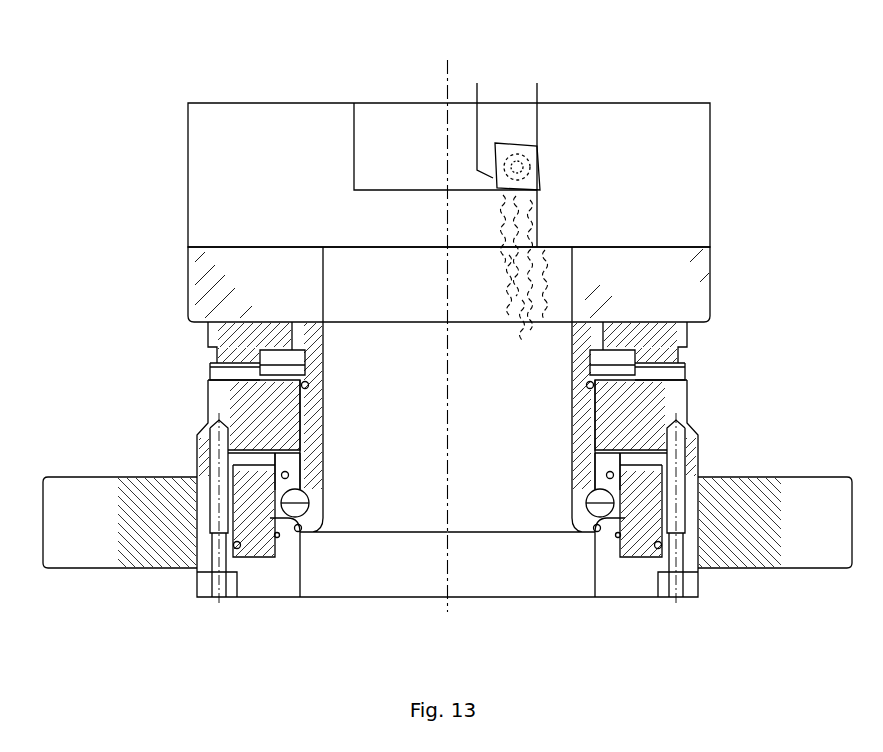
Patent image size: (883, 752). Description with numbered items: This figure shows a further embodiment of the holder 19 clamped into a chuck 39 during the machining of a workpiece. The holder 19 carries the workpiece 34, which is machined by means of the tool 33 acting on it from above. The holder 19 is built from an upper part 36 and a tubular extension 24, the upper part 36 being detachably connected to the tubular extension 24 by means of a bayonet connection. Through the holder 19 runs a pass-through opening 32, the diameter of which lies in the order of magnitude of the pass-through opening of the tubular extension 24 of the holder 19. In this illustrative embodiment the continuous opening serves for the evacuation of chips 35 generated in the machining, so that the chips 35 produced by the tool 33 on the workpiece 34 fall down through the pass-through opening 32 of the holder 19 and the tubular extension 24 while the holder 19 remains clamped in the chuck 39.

The workpiece 34 is at (315, 133).
The tool 33 is at (507, 97).
The chips 35 is at (532, 222).
The holder 19 is at (670, 277).
The upper part 36 is at (208, 282).
The pass-through opening 32 is at (562, 310).
The tubular extension 24 is at (582, 415).
The chuck 39 is at (662, 415).